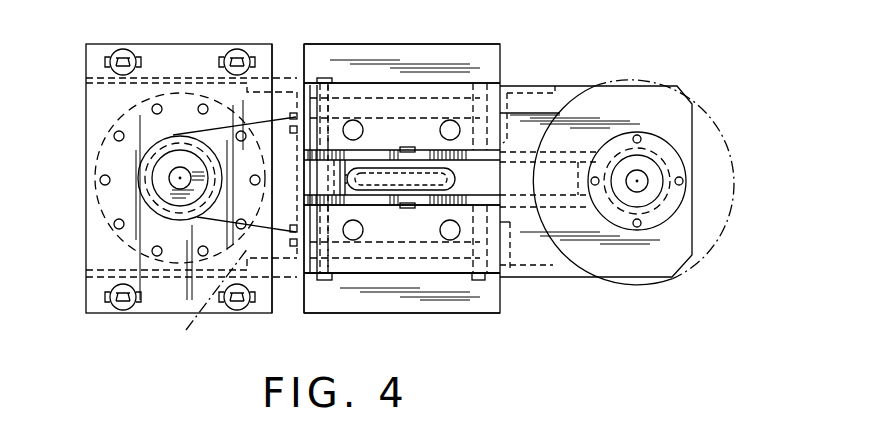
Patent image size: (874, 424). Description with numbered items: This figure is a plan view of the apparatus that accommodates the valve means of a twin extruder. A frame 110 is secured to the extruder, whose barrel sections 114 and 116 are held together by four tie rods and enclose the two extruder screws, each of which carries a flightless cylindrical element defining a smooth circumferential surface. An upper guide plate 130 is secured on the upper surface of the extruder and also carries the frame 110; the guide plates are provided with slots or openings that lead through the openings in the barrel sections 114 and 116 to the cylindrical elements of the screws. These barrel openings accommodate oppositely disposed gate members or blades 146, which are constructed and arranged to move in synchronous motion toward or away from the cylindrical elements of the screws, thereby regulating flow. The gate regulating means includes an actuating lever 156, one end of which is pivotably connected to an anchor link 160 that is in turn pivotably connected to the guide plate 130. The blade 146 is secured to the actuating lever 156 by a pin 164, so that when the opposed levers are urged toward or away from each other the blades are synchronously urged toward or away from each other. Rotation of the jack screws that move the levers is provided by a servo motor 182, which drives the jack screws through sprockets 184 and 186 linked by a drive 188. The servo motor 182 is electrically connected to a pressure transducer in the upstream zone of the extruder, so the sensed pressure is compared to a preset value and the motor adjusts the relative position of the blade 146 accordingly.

The frame 110 is at (287, 66).
The barrel section 114 is at (392, 62).
The barrel section 116 is at (381, 298).
The upper guide plate 130 is at (429, 238).
The gate member or blade 146 is at (427, 174).
The actuating lever 156 is at (463, 157).
The anchor link 160 is at (323, 167).
The pin 164 is at (404, 148).
The servo motor 182 is at (88, 247).
The sprocket 184 is at (162, 192).
The sprocket 186 is at (726, 110).
The drive 188 is at (200, 312).